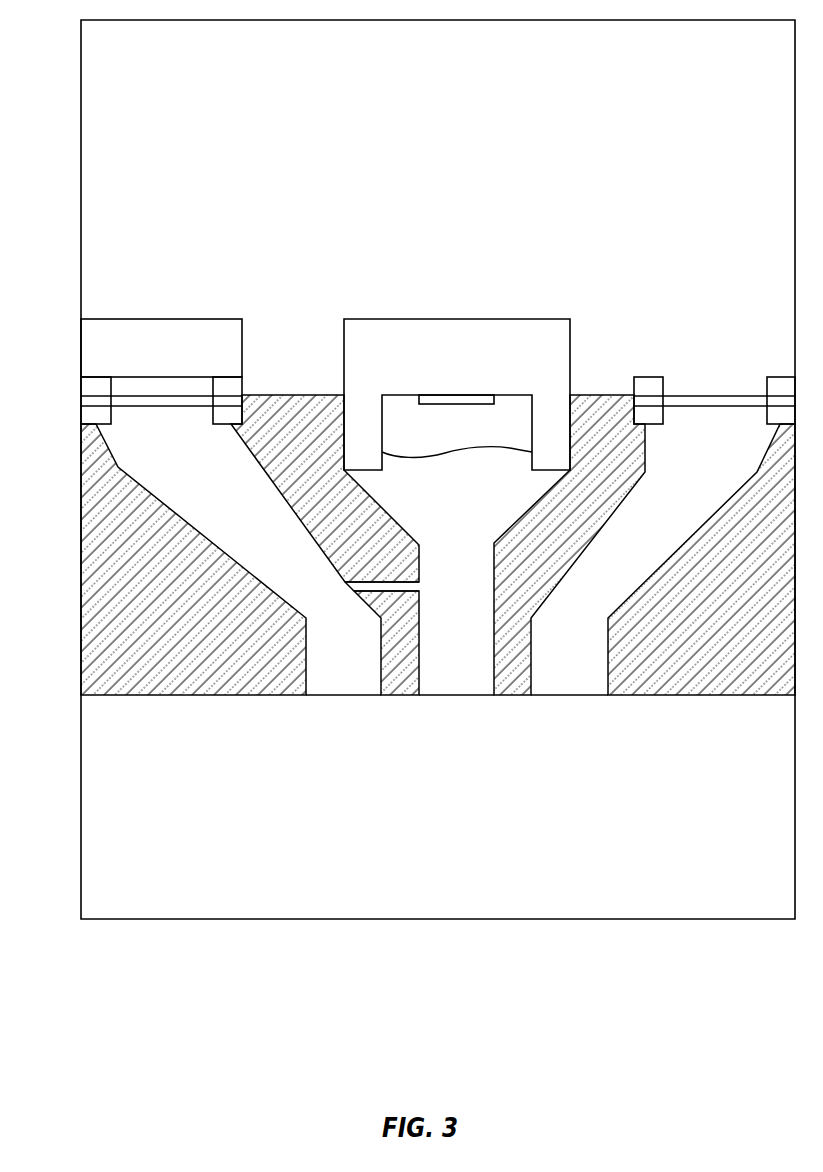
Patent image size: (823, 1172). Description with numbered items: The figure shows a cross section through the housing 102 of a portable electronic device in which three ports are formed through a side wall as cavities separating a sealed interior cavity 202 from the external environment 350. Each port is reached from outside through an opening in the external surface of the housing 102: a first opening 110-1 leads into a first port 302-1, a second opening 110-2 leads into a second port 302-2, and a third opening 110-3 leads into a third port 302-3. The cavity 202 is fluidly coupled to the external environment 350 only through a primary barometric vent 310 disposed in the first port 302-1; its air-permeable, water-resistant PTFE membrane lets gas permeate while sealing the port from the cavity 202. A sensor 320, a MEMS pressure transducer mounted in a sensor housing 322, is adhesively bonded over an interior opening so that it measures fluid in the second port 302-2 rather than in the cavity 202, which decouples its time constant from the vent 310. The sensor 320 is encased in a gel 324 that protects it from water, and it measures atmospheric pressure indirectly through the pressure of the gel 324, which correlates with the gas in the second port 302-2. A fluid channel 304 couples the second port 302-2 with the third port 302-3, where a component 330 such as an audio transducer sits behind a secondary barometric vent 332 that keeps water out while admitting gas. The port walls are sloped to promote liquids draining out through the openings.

The cavity 202 is at (442, 118).
The external environment 350 is at (445, 863).
The housing 102 is at (203, 697).
The third port 302-3 is at (312, 577).
The second port 302-2 is at (482, 577).
The first port 302-1 is at (639, 577).
The fluid channel 304 is at (370, 593).
The third opening 110-3 is at (352, 697).
The second opening 110-2 is at (465, 695).
The first opening 110-1 is at (578, 695).
The component 330 is at (127, 318).
The secondary barometric vent 332 is at (128, 396).
The primary barometric vent 310 is at (708, 393).
The sensor housing 322 is at (447, 318).
The sensor 320 is at (478, 395).
The gel 324 is at (473, 440).